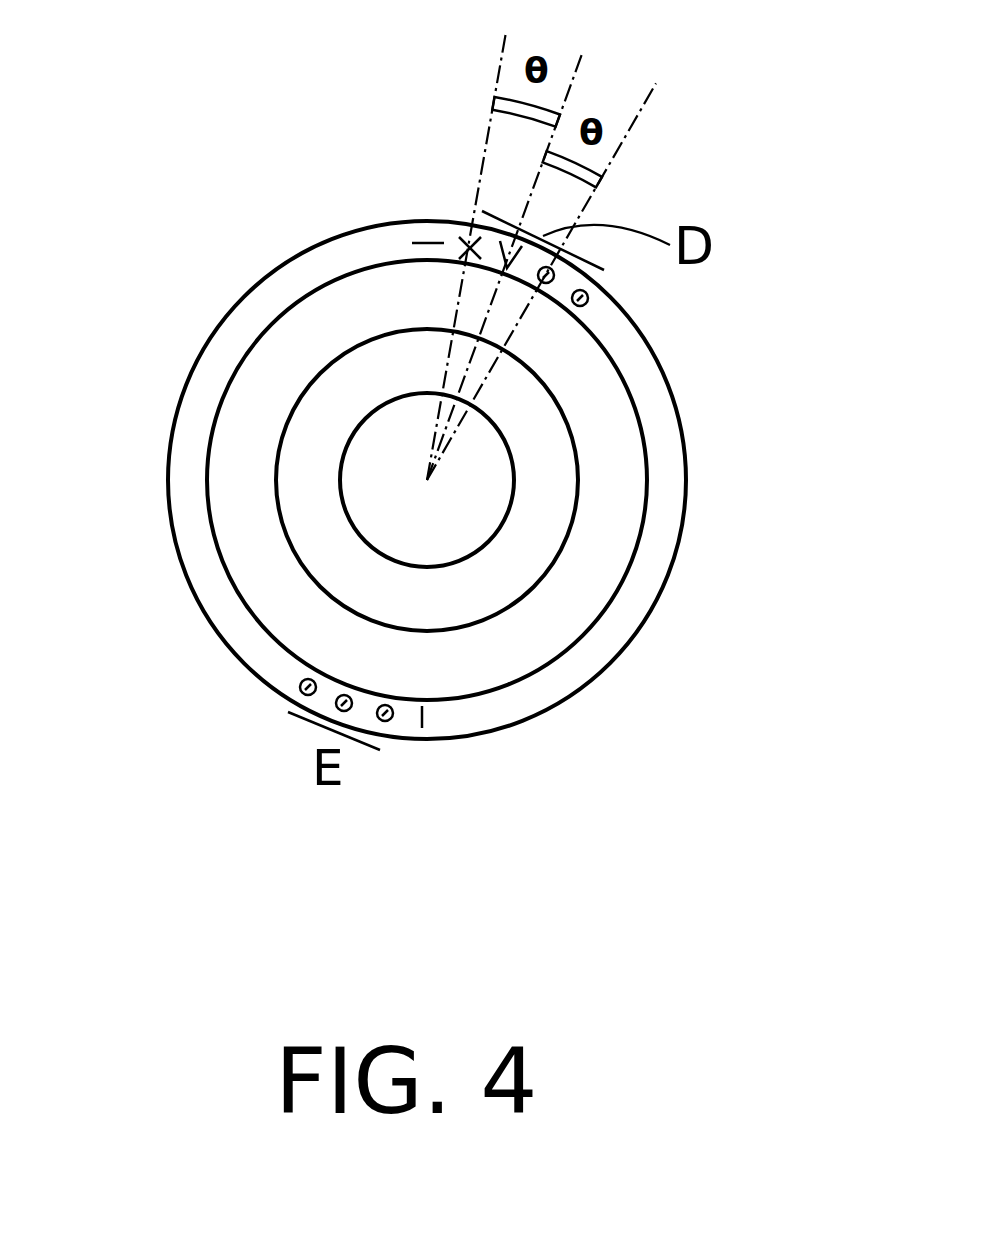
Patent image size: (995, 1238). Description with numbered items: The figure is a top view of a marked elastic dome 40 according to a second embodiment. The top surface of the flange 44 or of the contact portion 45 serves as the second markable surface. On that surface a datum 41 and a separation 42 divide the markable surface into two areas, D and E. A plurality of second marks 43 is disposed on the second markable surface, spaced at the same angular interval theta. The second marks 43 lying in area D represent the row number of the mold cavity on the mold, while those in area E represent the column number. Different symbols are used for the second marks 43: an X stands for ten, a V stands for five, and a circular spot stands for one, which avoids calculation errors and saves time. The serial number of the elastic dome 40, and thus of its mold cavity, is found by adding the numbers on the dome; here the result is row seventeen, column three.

The elastic dome 40 is at (230, 312).
The datum 41 is at (412, 242).
The separation 42 is at (424, 716).
The second marks 43 is at (587, 305).
The flange 44 is at (652, 558).
The contact portion 45 is at (320, 478).